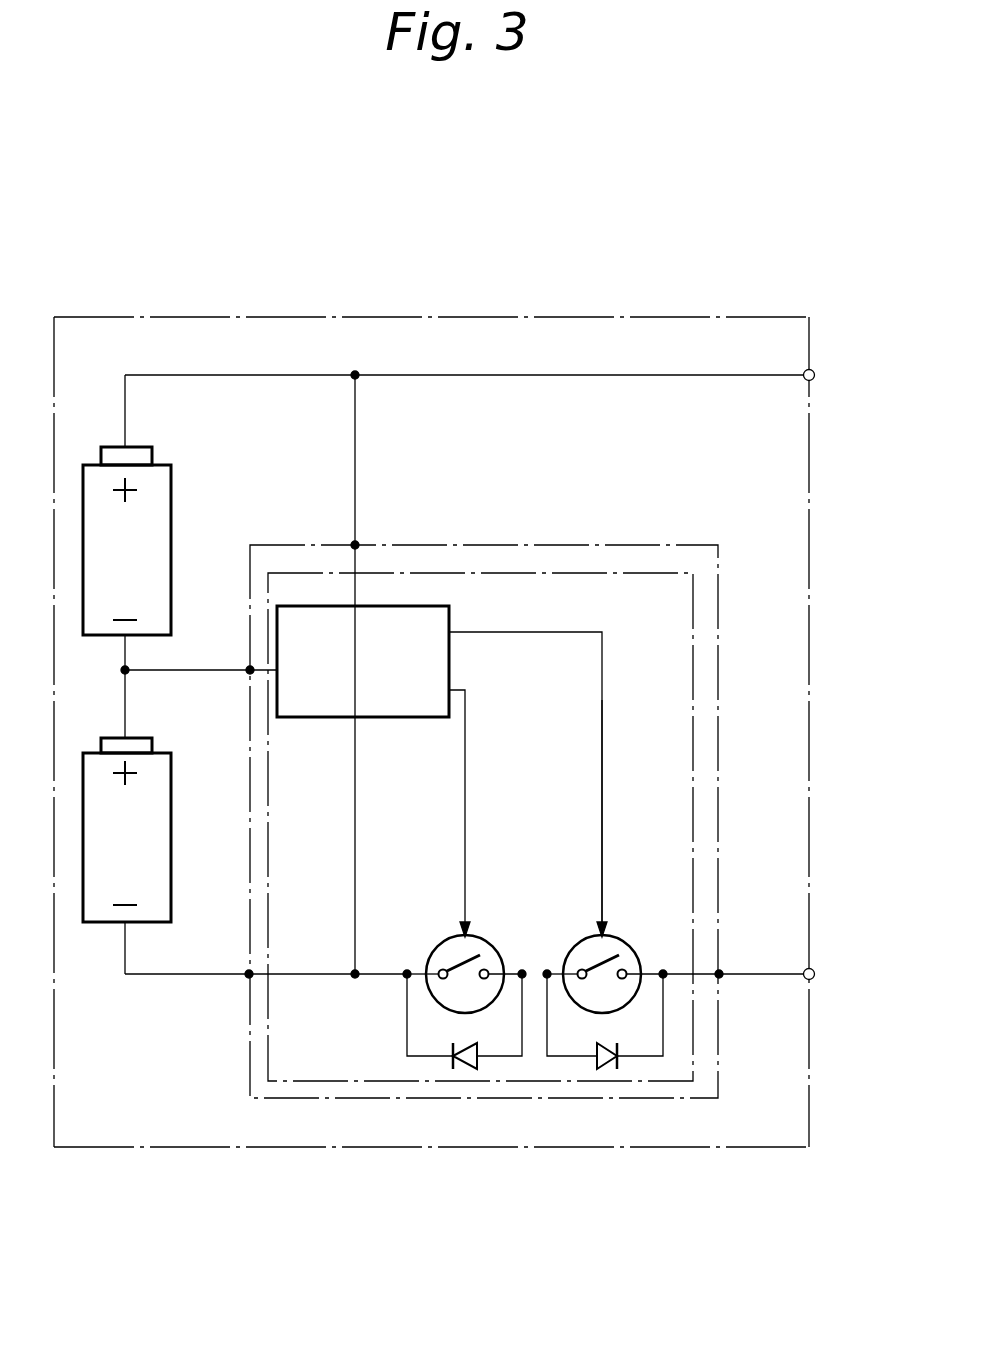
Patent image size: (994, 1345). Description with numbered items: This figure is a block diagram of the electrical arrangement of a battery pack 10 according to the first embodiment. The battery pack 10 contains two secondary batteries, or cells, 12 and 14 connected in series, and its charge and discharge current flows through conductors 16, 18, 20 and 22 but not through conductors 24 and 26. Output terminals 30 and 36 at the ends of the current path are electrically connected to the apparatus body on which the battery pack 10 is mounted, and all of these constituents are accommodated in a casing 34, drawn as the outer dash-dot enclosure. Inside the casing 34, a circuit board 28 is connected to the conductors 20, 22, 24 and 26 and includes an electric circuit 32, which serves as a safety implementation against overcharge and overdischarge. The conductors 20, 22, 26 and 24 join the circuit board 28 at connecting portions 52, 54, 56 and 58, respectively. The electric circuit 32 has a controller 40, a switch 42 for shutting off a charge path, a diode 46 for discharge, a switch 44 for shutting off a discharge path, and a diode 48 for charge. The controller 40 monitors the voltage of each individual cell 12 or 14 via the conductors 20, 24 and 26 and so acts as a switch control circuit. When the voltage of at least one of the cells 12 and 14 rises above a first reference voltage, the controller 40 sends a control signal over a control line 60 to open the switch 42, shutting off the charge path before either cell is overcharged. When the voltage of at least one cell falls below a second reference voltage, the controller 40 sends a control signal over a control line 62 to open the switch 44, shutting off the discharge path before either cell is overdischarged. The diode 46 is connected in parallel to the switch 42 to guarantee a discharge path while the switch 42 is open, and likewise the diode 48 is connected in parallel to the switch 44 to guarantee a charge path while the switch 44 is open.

The battery pack 10 is at (417, 260).
The secondary battery 12 is at (172, 488).
The secondary battery 14 is at (173, 845).
The conductor 16 is at (482, 377).
The conductor 18 is at (123, 707).
The conductor 20 is at (142, 976).
The conductor 22 is at (773, 976).
The conductor 24 is at (356, 507).
The conductor 26 is at (197, 672).
The circuit board 28 is at (502, 545).
The output terminal 30 is at (814, 371).
The electric circuit 32 is at (612, 573).
The casing 34 is at (687, 1150).
The output terminal 36 is at (814, 969).
The controller 40 is at (450, 612).
The switch 42 is at (482, 933).
The switch 44 is at (616, 933).
The diode 46 is at (464, 1071).
The diode 48 is at (604, 1071).
The connecting portion 52 is at (246, 978).
The connecting portion 54 is at (722, 966).
The connecting portion 56 is at (247, 669).
The connecting portion 58 is at (357, 543).
The control line 60 is at (466, 778).
The control line 62 is at (603, 778).